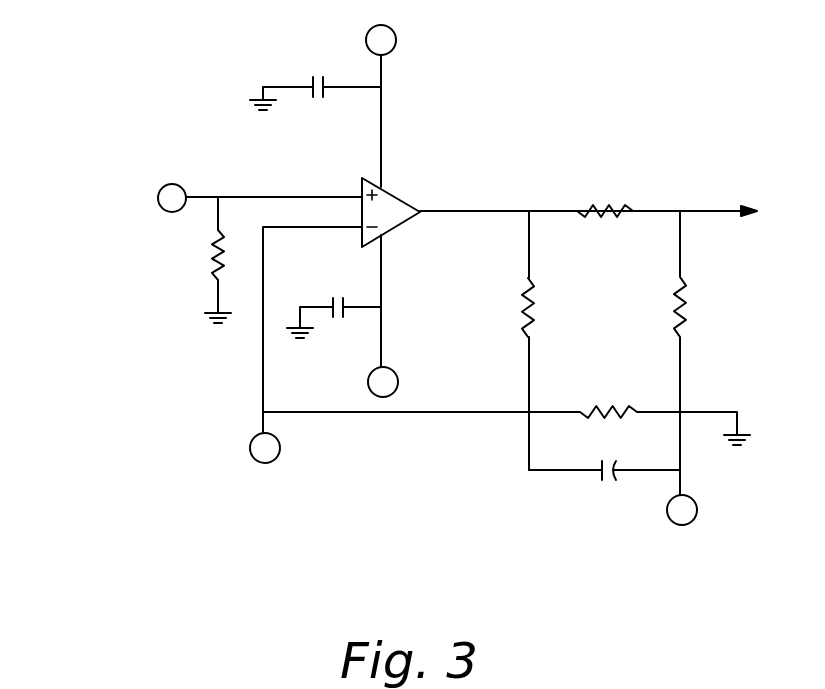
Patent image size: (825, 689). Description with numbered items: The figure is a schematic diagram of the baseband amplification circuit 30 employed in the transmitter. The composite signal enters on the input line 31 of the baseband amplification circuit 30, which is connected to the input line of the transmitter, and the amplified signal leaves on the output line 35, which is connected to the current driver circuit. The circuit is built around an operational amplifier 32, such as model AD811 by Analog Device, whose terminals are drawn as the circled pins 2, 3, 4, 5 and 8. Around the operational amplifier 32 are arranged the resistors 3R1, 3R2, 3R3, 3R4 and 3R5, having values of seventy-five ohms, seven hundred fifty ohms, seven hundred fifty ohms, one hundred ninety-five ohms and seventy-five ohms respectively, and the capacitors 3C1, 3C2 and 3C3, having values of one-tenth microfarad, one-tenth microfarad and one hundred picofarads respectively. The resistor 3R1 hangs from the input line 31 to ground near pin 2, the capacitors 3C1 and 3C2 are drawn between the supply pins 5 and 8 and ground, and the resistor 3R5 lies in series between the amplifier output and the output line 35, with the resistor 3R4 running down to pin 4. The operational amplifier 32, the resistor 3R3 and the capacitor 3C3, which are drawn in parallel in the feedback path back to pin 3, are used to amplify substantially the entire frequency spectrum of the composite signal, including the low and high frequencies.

The baseband amplification circuit 30 is at (603, 98).
The input line 31 is at (210, 163).
The operational amplifier 32 is at (395, 193).
The output line 35 is at (707, 211).
The pin 2 is at (172, 198).
The pin 3 is at (306, 345).
The pin 4 is at (682, 497).
The pin 5 is at (381, 106).
The pin 8 is at (383, 316).
The resistor 3R1 is at (196, 260).
The resistor 3R2 is at (498, 340).
The resistor 3R3 is at (506, 410).
The resistor 3R4 is at (711, 340).
The resistor 3R5 is at (606, 195).
The capacitor 3C1 is at (315, 77).
The capacitor 3C2 is at (334, 335).
The capacitor 3C3 is at (604, 489).